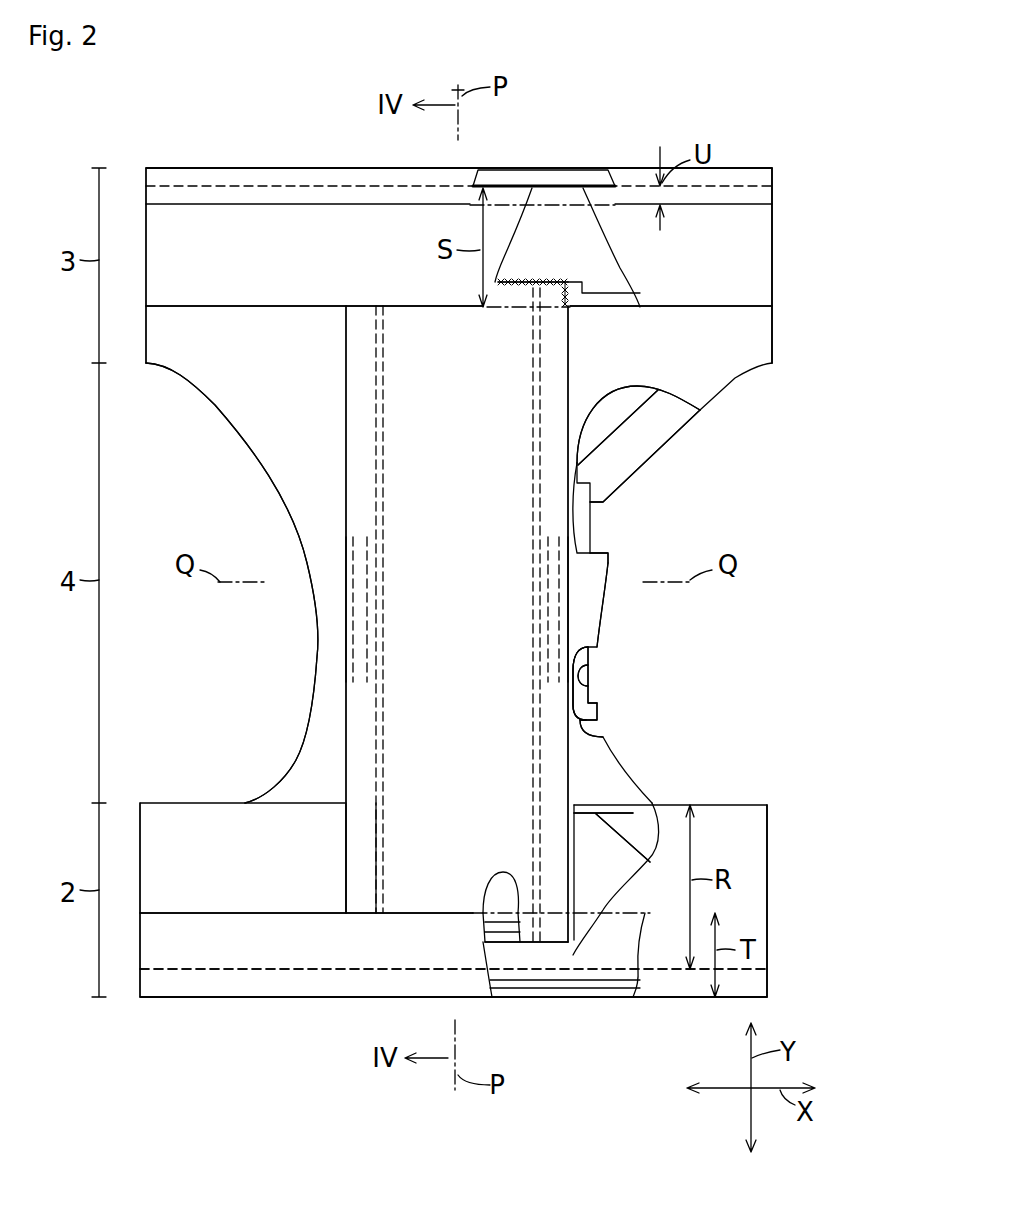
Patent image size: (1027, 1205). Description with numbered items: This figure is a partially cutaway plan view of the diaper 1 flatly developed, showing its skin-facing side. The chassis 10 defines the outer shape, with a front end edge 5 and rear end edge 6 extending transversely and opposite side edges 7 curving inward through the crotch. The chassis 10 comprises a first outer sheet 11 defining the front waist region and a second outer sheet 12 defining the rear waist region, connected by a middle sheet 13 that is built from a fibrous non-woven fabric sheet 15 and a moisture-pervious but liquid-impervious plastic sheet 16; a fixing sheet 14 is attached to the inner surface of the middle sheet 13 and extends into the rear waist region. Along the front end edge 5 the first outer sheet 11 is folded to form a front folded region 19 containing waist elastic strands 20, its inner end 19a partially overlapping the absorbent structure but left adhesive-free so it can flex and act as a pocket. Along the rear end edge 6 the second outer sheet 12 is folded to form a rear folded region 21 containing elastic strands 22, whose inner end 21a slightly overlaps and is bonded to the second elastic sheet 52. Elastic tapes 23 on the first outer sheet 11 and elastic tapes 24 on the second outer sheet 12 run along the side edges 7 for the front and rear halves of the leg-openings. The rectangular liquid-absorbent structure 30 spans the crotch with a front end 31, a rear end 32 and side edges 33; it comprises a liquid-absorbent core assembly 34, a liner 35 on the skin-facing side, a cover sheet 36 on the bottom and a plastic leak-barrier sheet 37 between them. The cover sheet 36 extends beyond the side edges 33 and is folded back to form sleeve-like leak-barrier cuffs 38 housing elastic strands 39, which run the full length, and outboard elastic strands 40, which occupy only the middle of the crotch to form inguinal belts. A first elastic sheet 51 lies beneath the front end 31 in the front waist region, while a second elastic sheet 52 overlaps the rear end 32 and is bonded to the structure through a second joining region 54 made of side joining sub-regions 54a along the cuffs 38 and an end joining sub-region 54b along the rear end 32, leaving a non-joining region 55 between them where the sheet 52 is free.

The diaper 1 is at (734, 115).
The front end edge 5 is at (245, 997).
The rear end edge 6 is at (240, 168).
The side edges 7 is at (245, 445).
The chassis 10 is at (788, 213).
The first outer sheet 11 is at (595, 727).
The second outer sheet 12 is at (630, 488).
The middle sheet 13 is at (655, 645).
The fixing sheet 14 is at (610, 553).
The fibrous non-woven fabric sheet 15 is at (583, 680).
The plastic sheet 16 is at (583, 657).
The front folded region 19 is at (330, 955).
The inner end of front folded region 19a is at (272, 913).
The elastic strands 20 is at (603, 985).
The rear folded region 21 is at (333, 185).
The inner end of rear folded region 21a is at (282, 205).
The elastic strands 22 is at (567, 184).
The elastic tapes 23 is at (638, 815).
The elastic tapes 24 is at (650, 443).
The liquid-absorbent structure 30 is at (327, 444).
The front end of liquid-absorbent structure 31 is at (510, 943).
The rear end of liquid-absorbent structure 32 is at (520, 282).
The side edges of liquid-absorbent structure 33 is at (345, 597).
The liquid-absorbent core assembly 34 is at (497, 875).
The liner 35 is at (405, 900).
The cover sheet 36 is at (505, 937).
The leak-barrier sheet 37 is at (500, 920).
The leak-barrier cuffs 38 is at (358, 333).
The elastic strands 39 is at (382, 497).
The elastic strands 40 is at (350, 552).
The first elastic sheet 51 is at (757, 858).
The second elastic sheet 52 is at (757, 265).
The second joining region 54 is at (572, 286).
The side joining sub-regions 54a is at (573, 300).
The end joining sub-region 54b is at (563, 285).
The non-joining region 55 is at (512, 297).